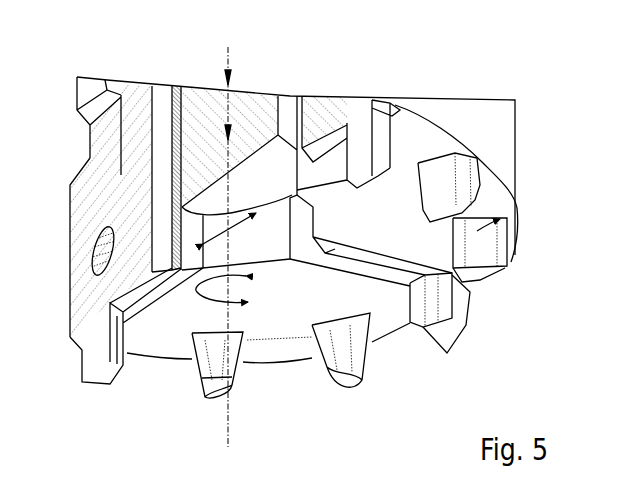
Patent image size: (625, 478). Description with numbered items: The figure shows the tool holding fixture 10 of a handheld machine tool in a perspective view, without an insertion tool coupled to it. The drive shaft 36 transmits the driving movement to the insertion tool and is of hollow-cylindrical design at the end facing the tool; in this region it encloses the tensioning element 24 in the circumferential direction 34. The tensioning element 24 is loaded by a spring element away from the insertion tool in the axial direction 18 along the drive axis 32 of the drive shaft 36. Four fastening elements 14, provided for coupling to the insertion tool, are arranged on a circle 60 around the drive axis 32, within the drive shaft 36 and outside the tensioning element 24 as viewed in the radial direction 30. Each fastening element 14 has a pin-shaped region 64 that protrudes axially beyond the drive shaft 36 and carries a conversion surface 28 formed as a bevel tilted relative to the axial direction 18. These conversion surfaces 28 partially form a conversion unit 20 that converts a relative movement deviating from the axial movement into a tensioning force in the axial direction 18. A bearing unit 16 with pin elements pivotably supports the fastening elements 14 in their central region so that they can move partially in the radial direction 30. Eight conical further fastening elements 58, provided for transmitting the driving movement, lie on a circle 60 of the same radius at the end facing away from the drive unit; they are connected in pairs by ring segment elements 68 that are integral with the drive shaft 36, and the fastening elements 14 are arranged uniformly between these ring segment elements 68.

The tool holding fixture 10 is at (265, 380).
The fastening element 14 is at (80, 243).
The bearing unit 16 is at (72, 266).
The axial direction 18 is at (244, 102).
The conversion unit 20 is at (400, 327).
The tensioning element 24 is at (262, 118).
The conversion surface 28 is at (433, 335).
The radial direction 30 is at (238, 228).
The drive axis 32 is at (226, 57).
The circumferential direction 34 is at (212, 303).
The drive shaft 36 is at (92, 88).
The further fastening element 58 is at (502, 190).
The circle 60 is at (290, 358).
The pin-shaped region 64 is at (82, 353).
The ring segment element 68 is at (150, 322).